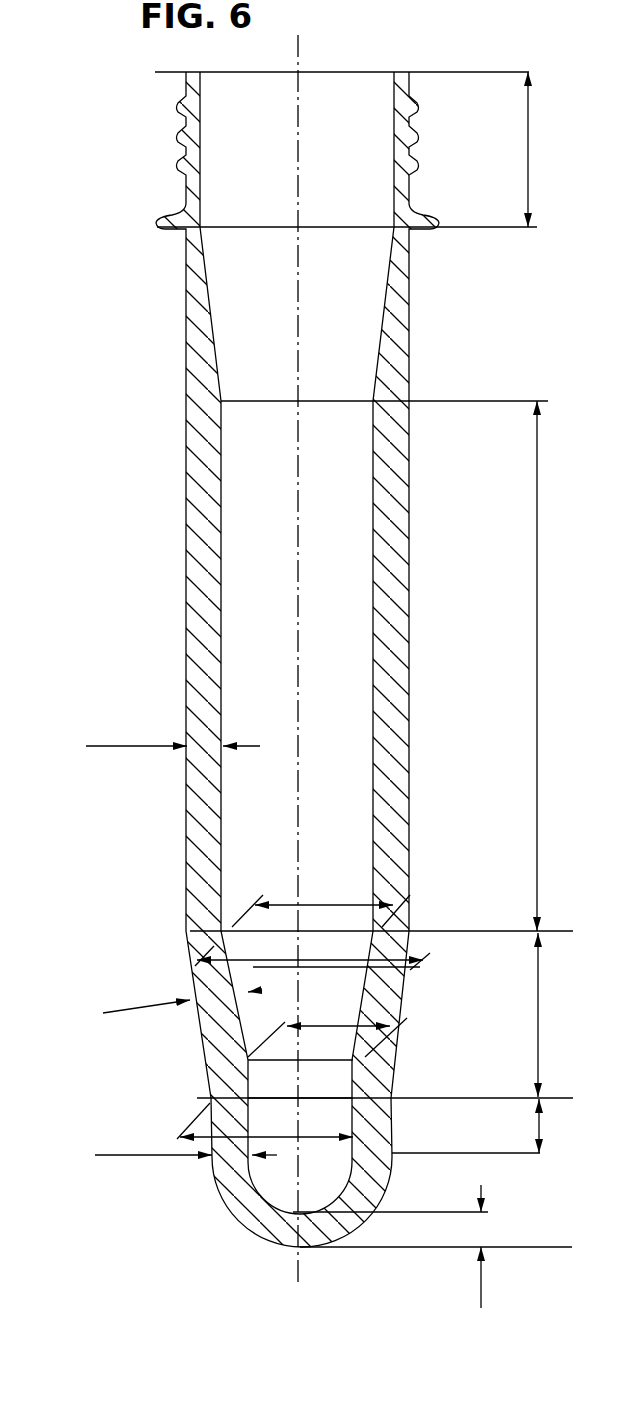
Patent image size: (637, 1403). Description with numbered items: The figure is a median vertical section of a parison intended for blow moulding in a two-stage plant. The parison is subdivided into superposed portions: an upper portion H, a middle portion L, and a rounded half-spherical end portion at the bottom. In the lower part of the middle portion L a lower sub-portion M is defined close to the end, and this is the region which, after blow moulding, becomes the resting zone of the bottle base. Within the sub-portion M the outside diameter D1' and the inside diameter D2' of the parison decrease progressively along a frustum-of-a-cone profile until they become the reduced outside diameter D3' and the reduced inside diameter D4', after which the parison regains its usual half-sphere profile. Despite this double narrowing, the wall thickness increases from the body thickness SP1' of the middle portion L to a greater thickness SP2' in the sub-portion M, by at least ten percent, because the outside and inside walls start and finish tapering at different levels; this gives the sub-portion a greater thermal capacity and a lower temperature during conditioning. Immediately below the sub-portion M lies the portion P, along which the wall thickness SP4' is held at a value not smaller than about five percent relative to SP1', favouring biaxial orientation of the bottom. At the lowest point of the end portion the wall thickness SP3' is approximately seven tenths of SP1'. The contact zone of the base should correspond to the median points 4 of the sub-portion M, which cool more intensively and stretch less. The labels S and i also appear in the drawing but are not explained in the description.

The median points 4 is at (198, 1013).
The support ring / separation section S is at (253, 967).
The injection point / bottom inner region i is at (332, 1098).
The upper portion H is at (513, 149).
The middle portion L is at (518, 666).
The lower sub-portion M is at (520, 1015).
The portion immediately below the sub-portion P is at (520, 1126).
The wall thickness of the parison body SP1' is at (173, 732).
The increased wall thickness SP2' is at (182, 998).
The wall thickness at the lowest point of the end portion SP3' is at (464, 1248).
The wall thickness of portion P SP4' is at (186, 1141).
The outside diameter D1' is at (312, 952).
The inside diameter D2' is at (321, 901).
The reduced outside diameter D3' is at (265, 1121).
The reduced inside diameter D4' is at (327, 1027).